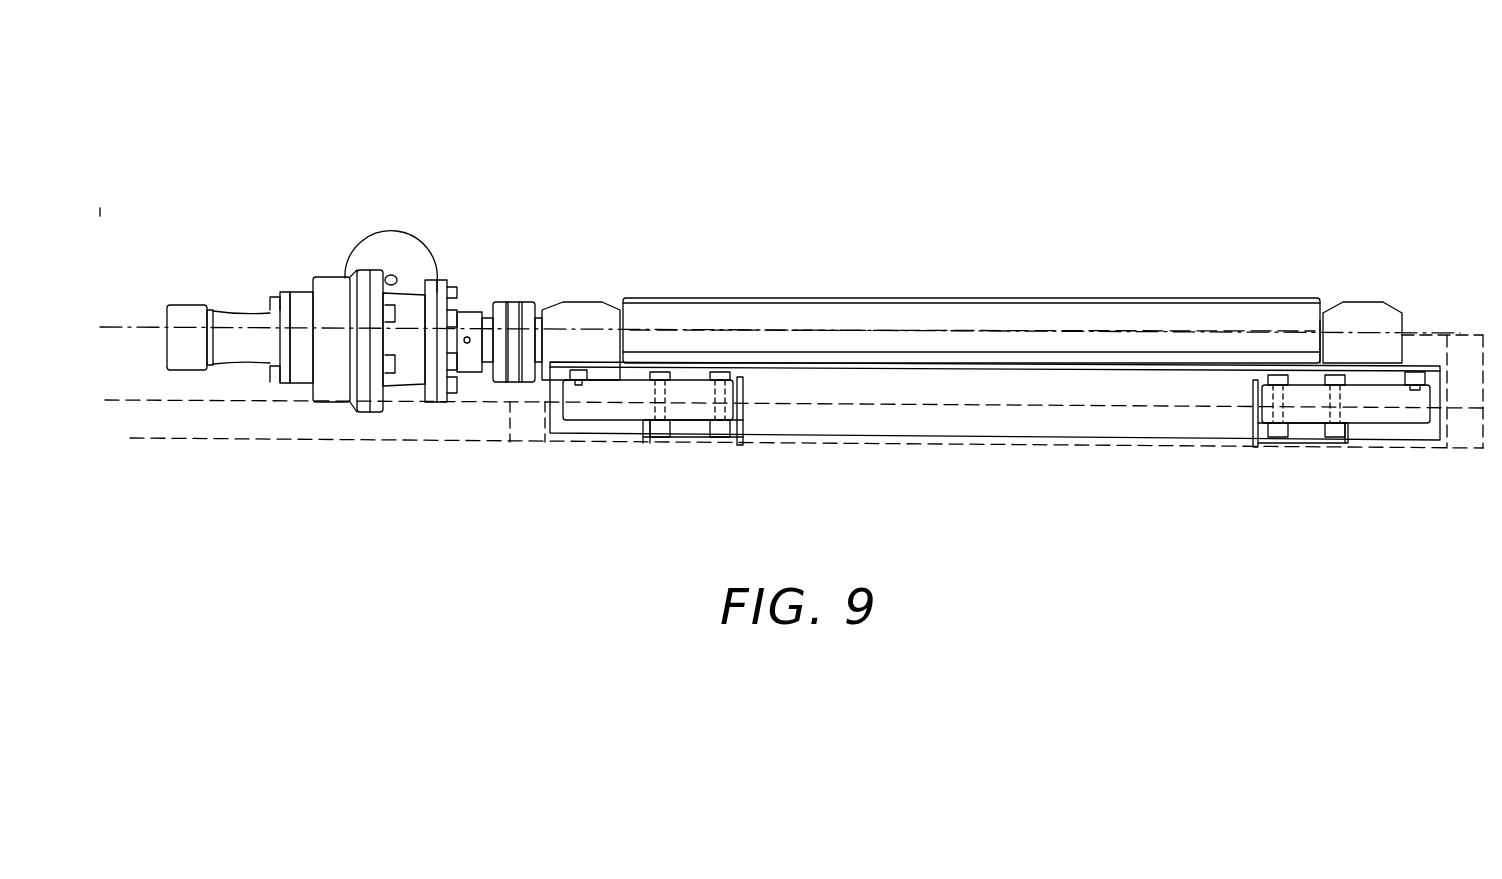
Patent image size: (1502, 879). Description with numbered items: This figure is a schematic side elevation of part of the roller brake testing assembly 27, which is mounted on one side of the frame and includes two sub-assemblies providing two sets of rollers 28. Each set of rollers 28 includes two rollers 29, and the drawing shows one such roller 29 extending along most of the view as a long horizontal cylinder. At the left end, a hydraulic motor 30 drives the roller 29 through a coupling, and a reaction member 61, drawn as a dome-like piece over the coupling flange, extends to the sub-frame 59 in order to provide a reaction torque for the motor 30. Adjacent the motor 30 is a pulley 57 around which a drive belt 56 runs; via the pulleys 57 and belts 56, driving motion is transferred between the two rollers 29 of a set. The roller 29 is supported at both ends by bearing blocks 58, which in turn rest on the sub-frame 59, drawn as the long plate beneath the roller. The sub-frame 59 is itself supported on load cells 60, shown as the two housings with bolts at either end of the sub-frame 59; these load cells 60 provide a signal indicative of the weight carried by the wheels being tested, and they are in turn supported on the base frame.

The roller brake testing assembly 27 is at (944, 166).
The set of rollers 28 is at (971, 268).
The roller 29 is at (783, 312).
The hydraulic motor 30 is at (298, 308).
The drive belt 56 is at (515, 313).
The pulley 57 is at (485, 313).
The bearing block 58 is at (580, 315).
The sub-frame 59 is at (988, 410).
The load cell 60 is at (598, 418).
The reaction member 61 is at (387, 242).